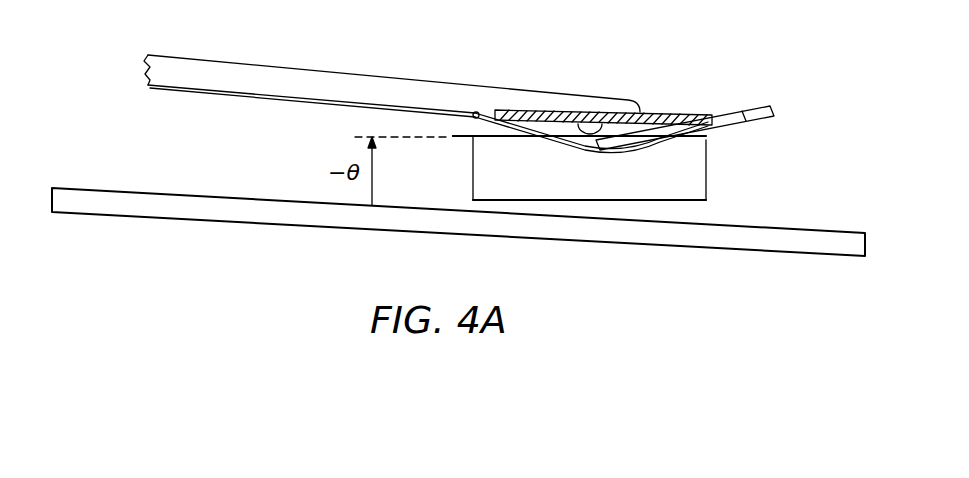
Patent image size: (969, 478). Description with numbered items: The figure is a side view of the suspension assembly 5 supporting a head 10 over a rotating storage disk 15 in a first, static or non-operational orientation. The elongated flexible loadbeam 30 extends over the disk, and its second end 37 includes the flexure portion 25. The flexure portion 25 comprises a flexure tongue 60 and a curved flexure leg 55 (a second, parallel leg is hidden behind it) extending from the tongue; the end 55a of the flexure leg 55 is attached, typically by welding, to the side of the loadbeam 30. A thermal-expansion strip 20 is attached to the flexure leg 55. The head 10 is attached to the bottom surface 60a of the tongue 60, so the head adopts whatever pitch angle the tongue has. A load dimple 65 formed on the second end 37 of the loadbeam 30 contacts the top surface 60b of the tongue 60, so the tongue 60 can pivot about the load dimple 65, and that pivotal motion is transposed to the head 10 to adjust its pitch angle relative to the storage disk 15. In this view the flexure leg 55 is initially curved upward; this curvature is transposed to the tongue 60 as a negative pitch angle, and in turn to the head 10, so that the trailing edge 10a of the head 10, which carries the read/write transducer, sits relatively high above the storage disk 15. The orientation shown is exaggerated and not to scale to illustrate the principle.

The suspension assembly 5 is at (153, 30).
The loadbeam 30 is at (310, 69).
The flexure leg 55 is at (585, 150).
The end of flexure leg 55a is at (480, 112).
The flexure tongue 60 is at (473, 113).
The bottom surface of tongue 60a is at (453, 139).
The top surface of tongue 60b is at (453, 134).
The second end of loadbeam 37 is at (600, 91).
The load dimple 65 is at (632, 112).
The thermal-expansion strip 20 is at (700, 110).
The flexure portion 25 is at (713, 42).
The head 10 is at (707, 168).
The trailing edge of head 10a is at (695, 203).
The storage disk 15 is at (153, 218).